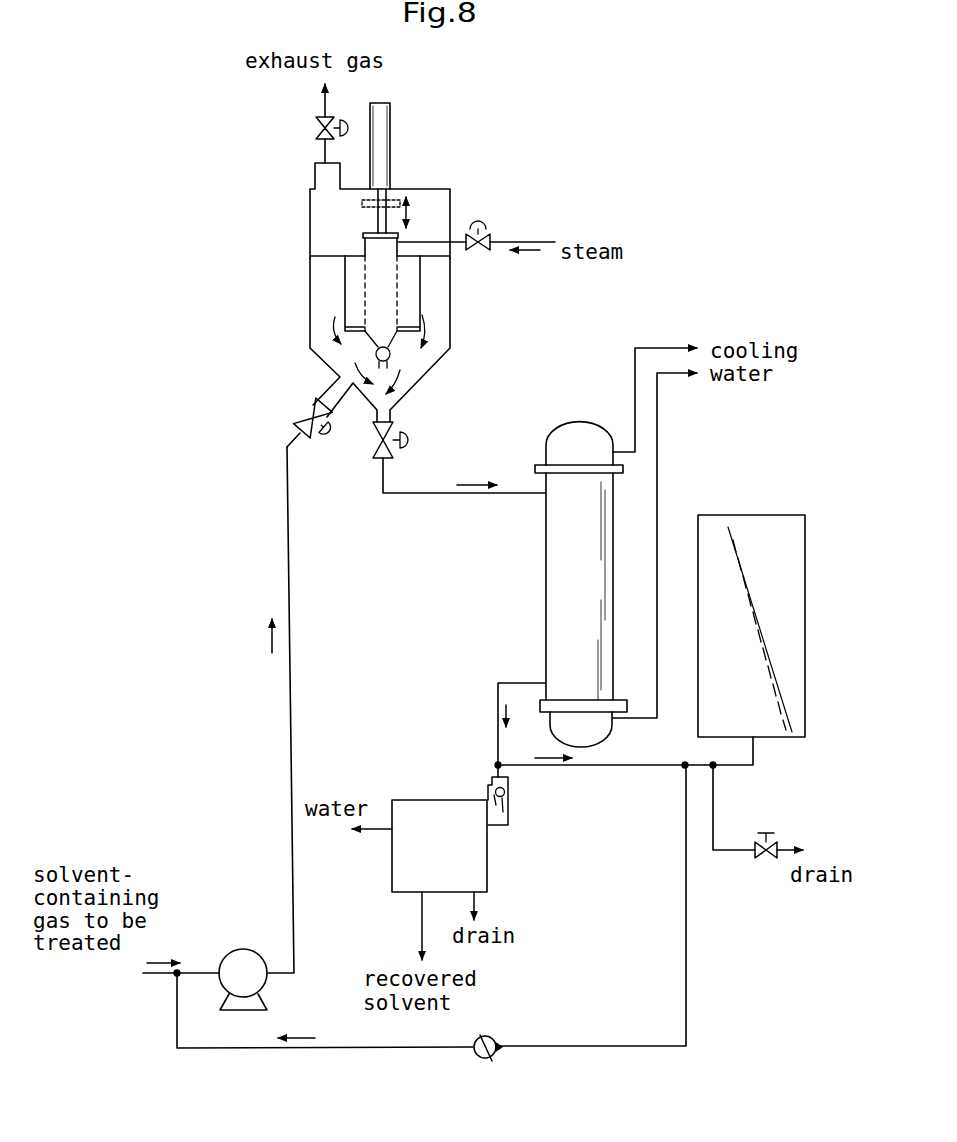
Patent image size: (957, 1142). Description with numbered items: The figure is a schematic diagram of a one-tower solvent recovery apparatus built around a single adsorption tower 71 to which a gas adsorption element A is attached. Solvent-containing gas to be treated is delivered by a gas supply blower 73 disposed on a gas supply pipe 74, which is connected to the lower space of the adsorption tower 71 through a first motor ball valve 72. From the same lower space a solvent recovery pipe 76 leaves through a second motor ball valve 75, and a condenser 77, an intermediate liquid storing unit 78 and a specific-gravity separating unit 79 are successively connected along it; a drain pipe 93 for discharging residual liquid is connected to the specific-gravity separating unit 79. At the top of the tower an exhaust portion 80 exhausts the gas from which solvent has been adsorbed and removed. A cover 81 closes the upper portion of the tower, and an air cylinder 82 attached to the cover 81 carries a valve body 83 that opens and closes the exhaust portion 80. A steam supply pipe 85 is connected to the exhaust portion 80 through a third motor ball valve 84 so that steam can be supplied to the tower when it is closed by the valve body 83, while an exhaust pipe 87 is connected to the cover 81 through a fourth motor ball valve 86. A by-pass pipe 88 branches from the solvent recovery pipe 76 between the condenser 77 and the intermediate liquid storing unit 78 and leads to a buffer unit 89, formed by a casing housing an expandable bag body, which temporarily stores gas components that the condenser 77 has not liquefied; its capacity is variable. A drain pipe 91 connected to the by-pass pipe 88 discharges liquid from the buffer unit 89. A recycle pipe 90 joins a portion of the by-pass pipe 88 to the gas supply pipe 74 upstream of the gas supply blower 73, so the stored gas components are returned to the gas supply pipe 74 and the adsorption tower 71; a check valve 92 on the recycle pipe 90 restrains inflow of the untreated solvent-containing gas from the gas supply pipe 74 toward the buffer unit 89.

The adsorption tower 71 is at (438, 362).
The first motor ball valve 72 is at (308, 403).
The gas supply blower 73 is at (242, 956).
The gas supply pipe 74 is at (292, 660).
The second motor ball valve 75 is at (409, 440).
The solvent recovery pipe 76 is at (452, 494).
The condenser 77 is at (553, 530).
The intermediate liquid storing unit 78 is at (507, 786).
The specific-gravity separating unit 79 is at (403, 865).
The exhaust portion 80 is at (382, 250).
The cover 81 is at (427, 188).
The air cylinder 82 is at (390, 135).
The valve body 83 is at (362, 235).
The third motor ball valve 84 is at (478, 224).
The steam supply pipe 85 is at (523, 241).
The fourth motor ball valve 86 is at (316, 128).
The exhaust pipe 87 is at (325, 105).
The by-pass pipe 88 is at (622, 768).
The buffer unit 89 is at (745, 527).
The recycle pipe 90 is at (585, 1050).
The drain pipe 91 is at (738, 853).
The check valve 92 is at (478, 1053).
The drain pipe 93 is at (474, 903).
The gas adsorption element A is at (428, 287).